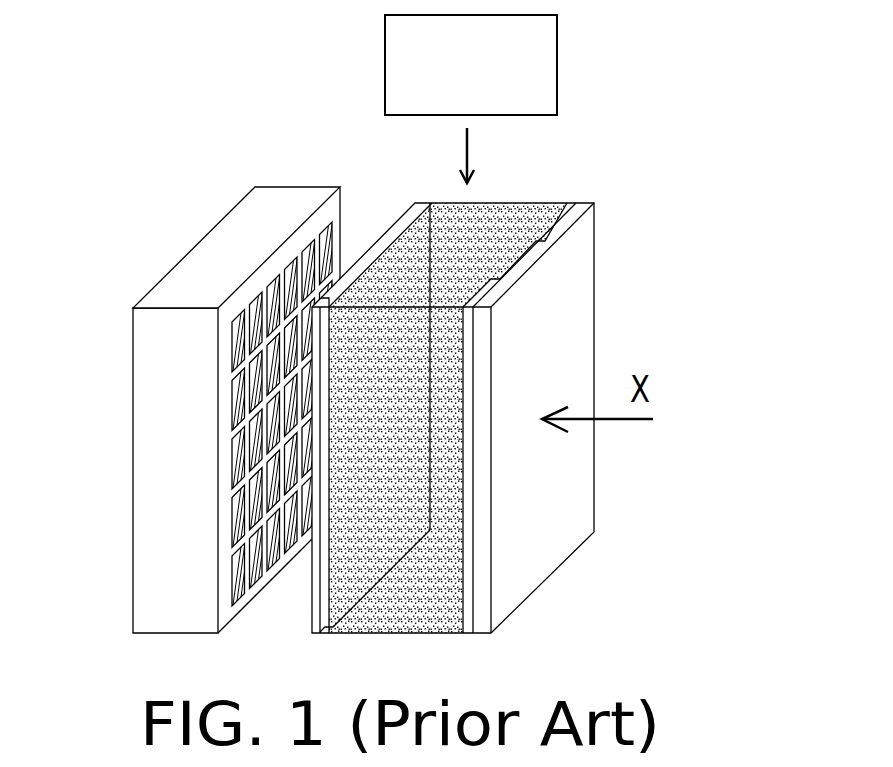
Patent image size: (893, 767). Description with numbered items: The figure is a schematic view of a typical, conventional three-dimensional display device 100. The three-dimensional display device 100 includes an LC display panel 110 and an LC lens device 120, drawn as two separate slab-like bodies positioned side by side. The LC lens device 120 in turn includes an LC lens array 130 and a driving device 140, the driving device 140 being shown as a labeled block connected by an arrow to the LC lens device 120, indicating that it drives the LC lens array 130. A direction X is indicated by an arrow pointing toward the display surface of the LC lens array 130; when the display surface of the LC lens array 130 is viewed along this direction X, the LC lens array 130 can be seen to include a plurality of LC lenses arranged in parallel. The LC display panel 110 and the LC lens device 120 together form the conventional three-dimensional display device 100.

The 3D display device 100 is at (410, 324).
The LC display panel 110 is at (148, 462).
The LC lens device 120 is at (716, 62).
The LC lens array 130 is at (530, 212).
The driving device 140 is at (557, 87).